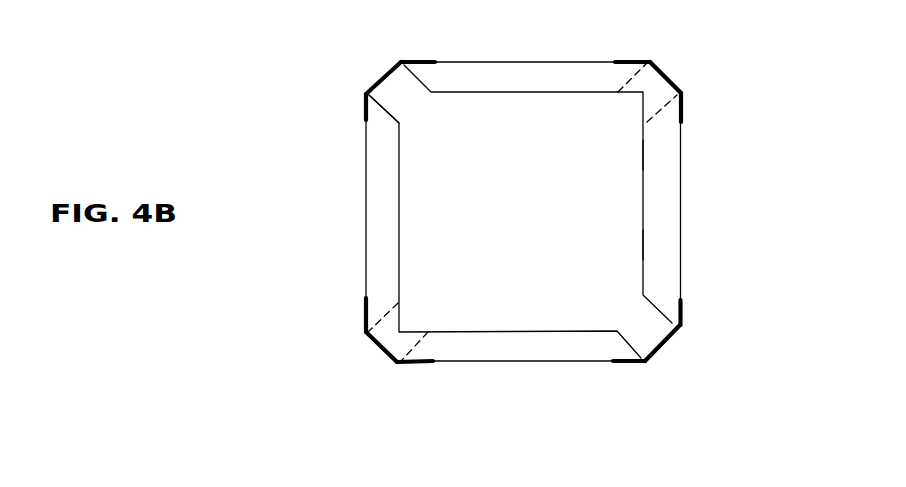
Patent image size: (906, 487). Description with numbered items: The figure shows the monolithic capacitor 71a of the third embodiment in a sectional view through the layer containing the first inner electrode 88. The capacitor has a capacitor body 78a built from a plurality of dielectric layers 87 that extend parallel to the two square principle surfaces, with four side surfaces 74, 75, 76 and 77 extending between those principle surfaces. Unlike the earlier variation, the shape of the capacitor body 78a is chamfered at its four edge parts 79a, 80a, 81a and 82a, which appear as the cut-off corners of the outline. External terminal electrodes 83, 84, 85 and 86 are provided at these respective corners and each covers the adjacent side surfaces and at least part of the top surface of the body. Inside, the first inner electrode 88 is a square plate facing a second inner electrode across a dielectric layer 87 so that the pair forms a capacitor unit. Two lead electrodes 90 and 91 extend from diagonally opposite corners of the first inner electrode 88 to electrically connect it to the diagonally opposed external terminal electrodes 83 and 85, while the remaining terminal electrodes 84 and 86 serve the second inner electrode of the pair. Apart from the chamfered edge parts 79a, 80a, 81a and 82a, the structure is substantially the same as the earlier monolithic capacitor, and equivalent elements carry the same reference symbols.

The monolithic capacitor 71a is at (308, 44).
The side surface 74 is at (507, 60).
The side surface 75 is at (681, 200).
The side surface 76 is at (515, 364).
The side surface 77 is at (367, 205).
The capacitor body 78a is at (571, 58).
The chamfered edge part 79a is at (388, 83).
The chamfered edge part 80a is at (667, 74).
The chamfered edge part 81a is at (658, 342).
The chamfered edge part 82a is at (385, 353).
The external terminal electrode 83 is at (422, 57).
The external terminal electrode 84 is at (683, 107).
The external terminal electrode 85 is at (635, 365).
The external terminal electrode 86 is at (365, 323).
The dielectric layer 87 is at (667, 156).
The first inner electrode 88 is at (643, 245).
The lead electrode 90 is at (395, 102).
The lead electrode 91 is at (650, 328).